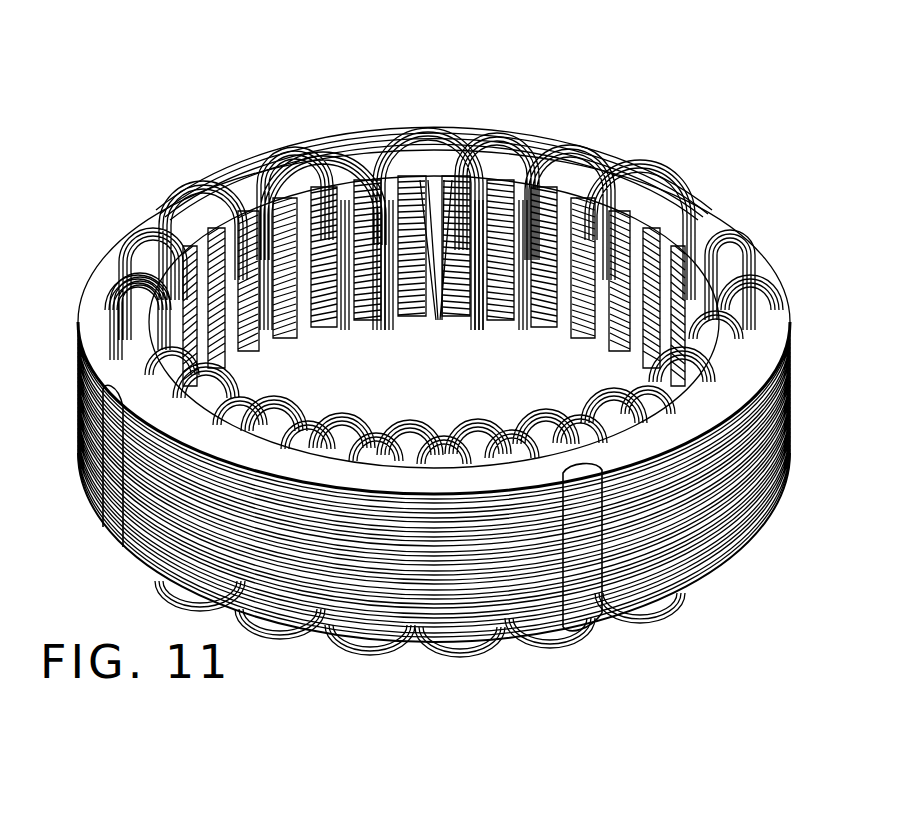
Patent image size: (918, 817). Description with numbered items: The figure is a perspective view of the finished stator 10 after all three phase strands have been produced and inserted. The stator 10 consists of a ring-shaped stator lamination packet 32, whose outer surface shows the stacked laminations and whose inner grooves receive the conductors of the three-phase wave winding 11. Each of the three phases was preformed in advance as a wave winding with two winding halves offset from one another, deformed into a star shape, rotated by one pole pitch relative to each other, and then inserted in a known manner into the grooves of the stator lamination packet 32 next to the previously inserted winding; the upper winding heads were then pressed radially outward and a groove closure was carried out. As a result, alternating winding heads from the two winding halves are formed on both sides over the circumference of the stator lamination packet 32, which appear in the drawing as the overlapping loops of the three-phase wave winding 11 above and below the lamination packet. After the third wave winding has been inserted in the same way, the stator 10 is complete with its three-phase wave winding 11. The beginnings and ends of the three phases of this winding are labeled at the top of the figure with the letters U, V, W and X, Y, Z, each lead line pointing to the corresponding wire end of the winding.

The stator 10 is at (798, 302).
The three-phase wave winding 11 is at (641, 167).
The stator lamination packet 32 is at (718, 540).
The phase beginning/end U is at (203, 200).
The phase beginning/end V is at (279, 190).
The phase beginning/end W is at (385, 160).
The phase beginning/end X is at (330, 170).
The phase beginning/end Y is at (436, 165).
The phase beginning/end Z is at (534, 145).